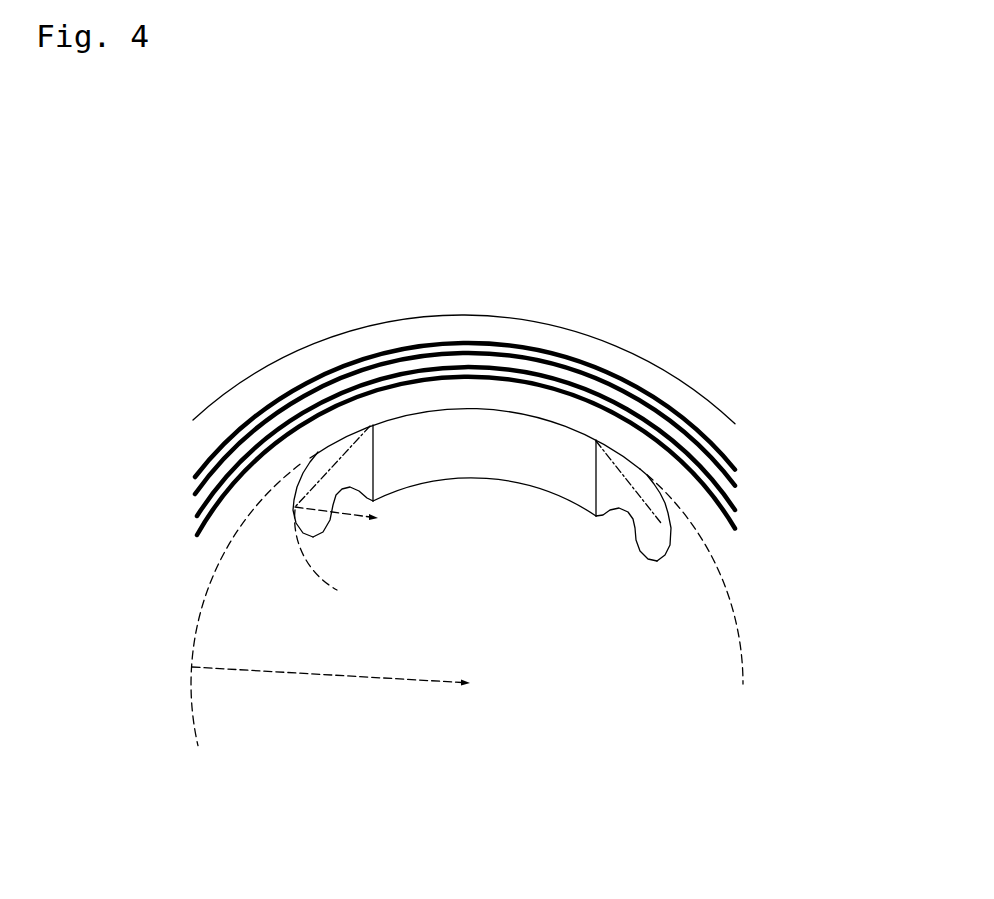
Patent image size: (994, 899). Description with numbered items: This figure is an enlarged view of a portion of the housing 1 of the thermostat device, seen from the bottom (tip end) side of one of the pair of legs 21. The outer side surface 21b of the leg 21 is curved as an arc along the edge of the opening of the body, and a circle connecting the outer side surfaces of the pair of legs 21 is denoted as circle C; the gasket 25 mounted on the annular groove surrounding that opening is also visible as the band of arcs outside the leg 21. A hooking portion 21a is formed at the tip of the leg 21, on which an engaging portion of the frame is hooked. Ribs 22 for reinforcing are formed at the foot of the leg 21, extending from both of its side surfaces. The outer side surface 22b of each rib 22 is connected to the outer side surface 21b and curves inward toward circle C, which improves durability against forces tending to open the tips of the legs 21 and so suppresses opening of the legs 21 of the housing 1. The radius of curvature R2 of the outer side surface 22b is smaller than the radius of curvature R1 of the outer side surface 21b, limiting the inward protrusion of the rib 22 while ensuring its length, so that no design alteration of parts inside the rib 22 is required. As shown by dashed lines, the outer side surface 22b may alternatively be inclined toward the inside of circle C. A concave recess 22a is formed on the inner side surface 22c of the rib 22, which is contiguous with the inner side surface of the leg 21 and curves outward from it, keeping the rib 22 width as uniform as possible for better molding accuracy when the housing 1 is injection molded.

The housing 1 is at (226, 392).
The leg 21 is at (477, 431).
The hooking portion 21a is at (473, 438).
The outer side surface of the leg 21b is at (577, 428).
The rib 22 is at (477, 453).
The recess 22a is at (333, 510).
The outer side surface of the rib 22b is at (327, 497).
The inner side surface of the rib 22c is at (480, 480).
The gasket 25 is at (549, 368).
The circle C is at (193, 686).
The radius of curvature of the outer side surface of the leg R1 is at (355, 677).
The radius of curvature of the outer side surface of the rib R2 is at (376, 521).